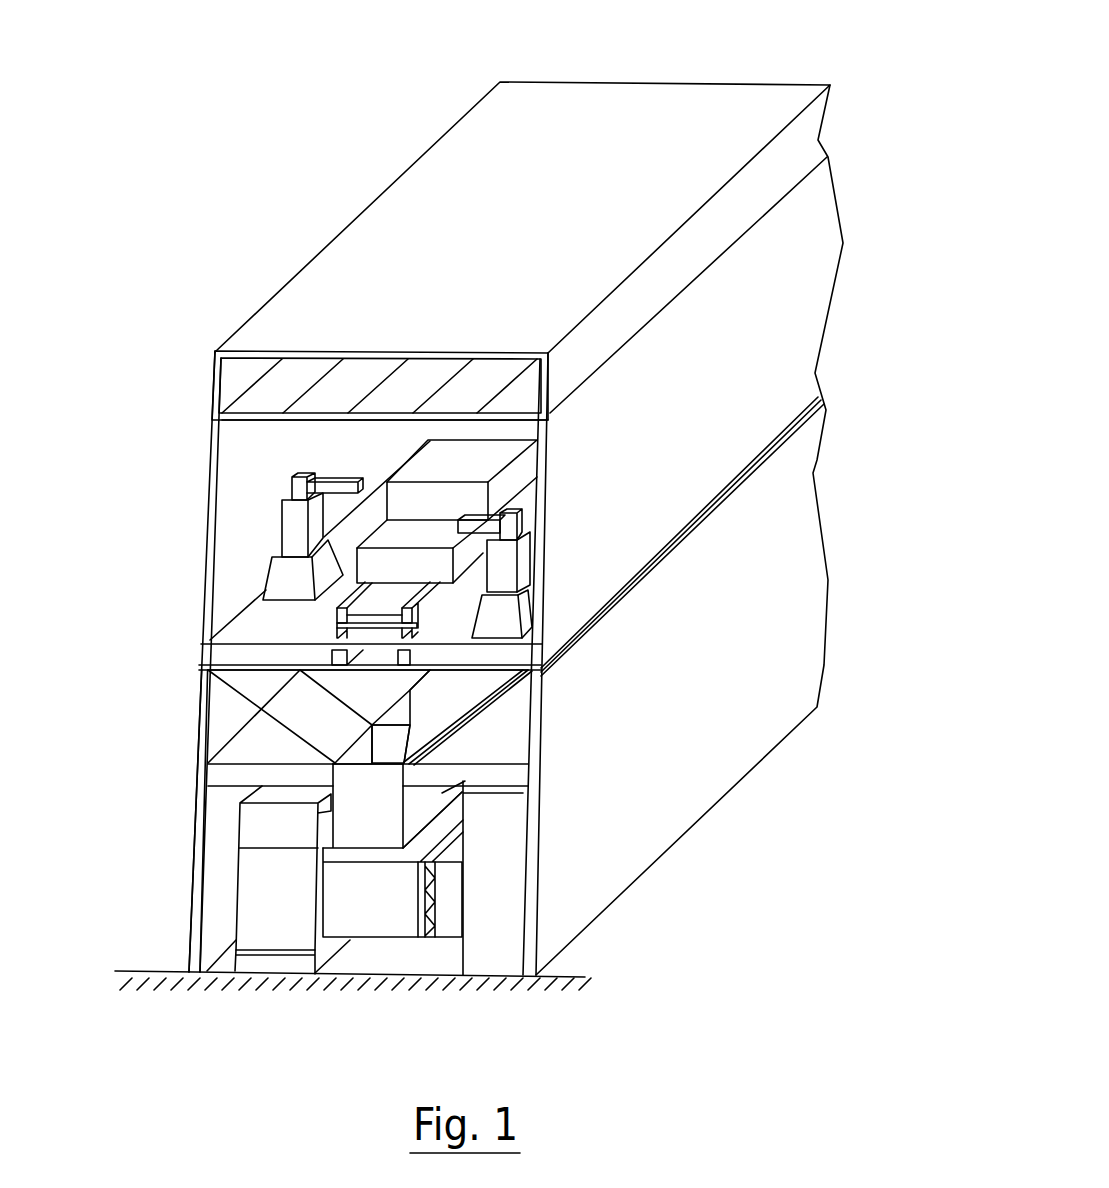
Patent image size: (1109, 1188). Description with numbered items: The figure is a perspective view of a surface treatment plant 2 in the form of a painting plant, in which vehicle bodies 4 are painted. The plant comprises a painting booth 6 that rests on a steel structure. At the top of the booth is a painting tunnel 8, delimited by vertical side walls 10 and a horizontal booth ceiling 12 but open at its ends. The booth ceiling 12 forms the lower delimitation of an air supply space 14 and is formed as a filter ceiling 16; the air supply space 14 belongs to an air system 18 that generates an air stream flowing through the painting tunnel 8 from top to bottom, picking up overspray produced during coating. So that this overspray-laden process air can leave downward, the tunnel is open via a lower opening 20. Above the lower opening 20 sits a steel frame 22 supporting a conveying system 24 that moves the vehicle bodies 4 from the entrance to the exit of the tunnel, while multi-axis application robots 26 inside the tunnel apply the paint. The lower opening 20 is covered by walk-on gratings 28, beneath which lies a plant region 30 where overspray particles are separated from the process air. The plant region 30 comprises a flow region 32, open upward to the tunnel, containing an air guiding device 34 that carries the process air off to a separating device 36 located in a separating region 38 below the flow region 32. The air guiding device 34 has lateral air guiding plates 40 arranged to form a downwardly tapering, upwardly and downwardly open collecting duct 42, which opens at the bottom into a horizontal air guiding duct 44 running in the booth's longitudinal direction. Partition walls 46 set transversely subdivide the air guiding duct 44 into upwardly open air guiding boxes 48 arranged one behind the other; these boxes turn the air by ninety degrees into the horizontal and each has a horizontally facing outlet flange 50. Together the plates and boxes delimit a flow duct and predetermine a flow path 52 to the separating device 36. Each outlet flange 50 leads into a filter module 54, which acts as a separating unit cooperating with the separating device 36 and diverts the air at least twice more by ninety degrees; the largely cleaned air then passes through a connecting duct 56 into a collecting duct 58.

The surface treatment plant 2 is at (288, 138).
The vehicle body 4 is at (488, 463).
The painting booth 6 is at (774, 337).
The painting tunnel 8 is at (384, 456).
The side wall 10 is at (212, 585).
The booth ceiling 12 is at (551, 419).
The air supply space 14 is at (416, 386).
The filter ceiling 16 is at (333, 412).
The air system 18 is at (203, 336).
The lower opening 20 is at (215, 660).
The steel frame 22 is at (431, 657).
The conveying system 24 is at (438, 618).
The application robot 26 is at (292, 527).
The walk-on grating 28 is at (258, 625).
The plant region 30 is at (187, 828).
The flow region 32 is at (231, 735).
The air guiding device 34 is at (468, 760).
The separating device 36 is at (350, 962).
The separating region 38 is at (224, 897).
The air guiding plate 40 is at (225, 682).
The collecting duct 42 is at (386, 706).
The air guiding duct 44 is at (333, 763).
The partition wall 46 is at (468, 692).
The air guiding box 48 is at (423, 807).
The outlet flange 50 is at (353, 1008).
The flow path 52 is at (354, 727).
The filter module 54 is at (261, 934).
The connecting duct 56 is at (405, 920).
The collecting duct 58 is at (505, 900).